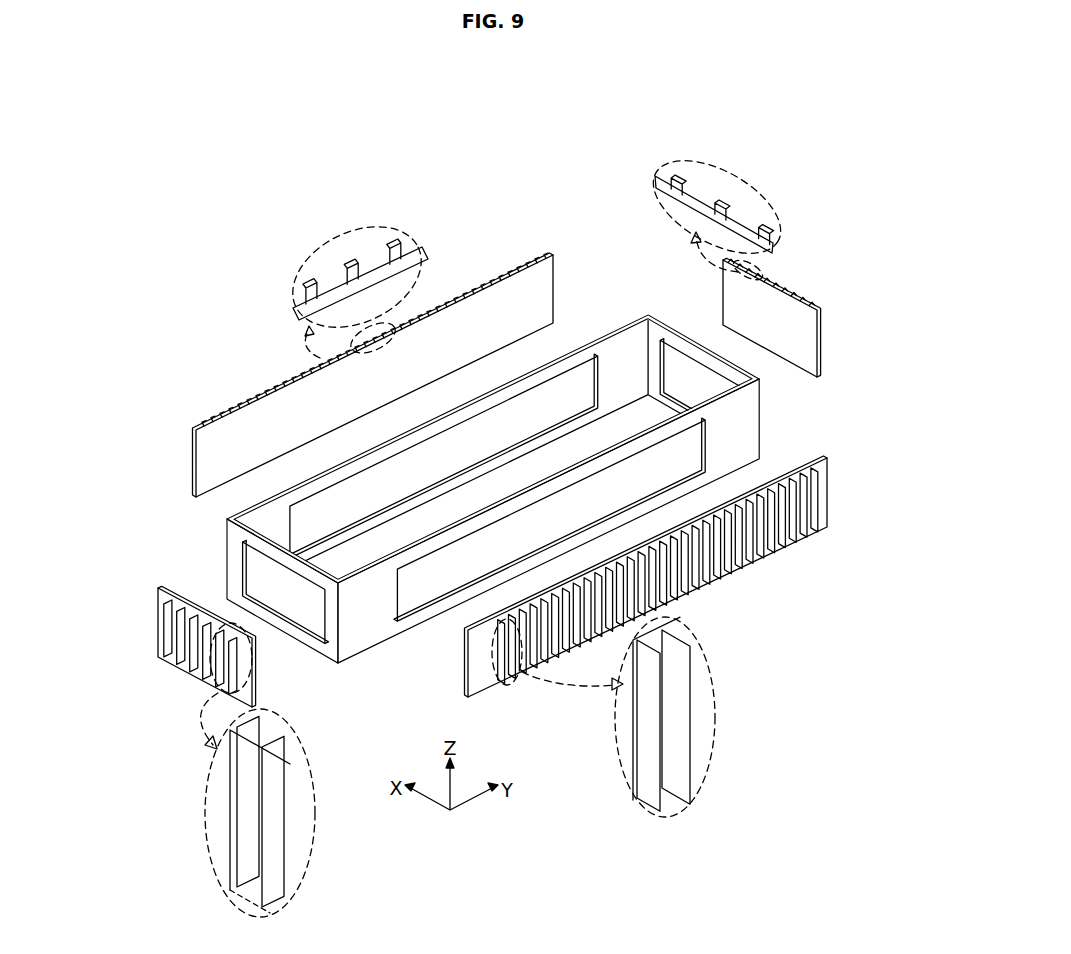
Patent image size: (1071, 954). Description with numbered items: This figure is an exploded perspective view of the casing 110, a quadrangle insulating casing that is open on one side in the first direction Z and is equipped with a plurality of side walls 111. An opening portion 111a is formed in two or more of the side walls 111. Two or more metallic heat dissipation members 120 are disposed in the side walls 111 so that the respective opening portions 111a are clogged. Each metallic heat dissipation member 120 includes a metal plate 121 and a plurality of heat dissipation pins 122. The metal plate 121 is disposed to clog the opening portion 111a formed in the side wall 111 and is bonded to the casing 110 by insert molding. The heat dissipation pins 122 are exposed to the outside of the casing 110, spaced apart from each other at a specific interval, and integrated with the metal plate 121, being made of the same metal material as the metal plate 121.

The casing 110 is at (226, 546).
The side wall 111 is at (330, 640).
The opening portion 111a is at (293, 612).
The metallic heat dissipation member 120 is at (247, 403).
The metal plate 121 is at (218, 457).
The heat dissipation pin 122 is at (301, 284).